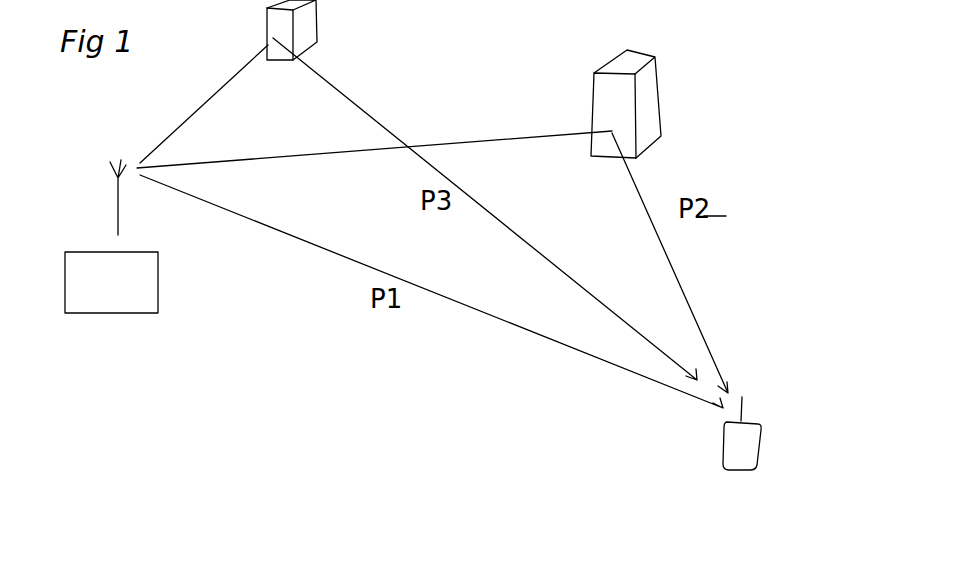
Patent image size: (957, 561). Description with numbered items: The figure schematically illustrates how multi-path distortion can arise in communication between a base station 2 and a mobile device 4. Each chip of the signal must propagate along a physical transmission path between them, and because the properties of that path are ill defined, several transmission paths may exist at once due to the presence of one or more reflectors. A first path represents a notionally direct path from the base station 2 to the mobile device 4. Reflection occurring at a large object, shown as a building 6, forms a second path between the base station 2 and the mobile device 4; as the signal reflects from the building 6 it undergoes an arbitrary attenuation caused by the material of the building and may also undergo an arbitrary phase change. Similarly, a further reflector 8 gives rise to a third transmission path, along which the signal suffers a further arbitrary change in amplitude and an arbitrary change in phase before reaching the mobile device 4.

The base station 2 is at (52, 270).
The mobile device 4 is at (773, 433).
The building 6 is at (665, 126).
The further reflector 8 is at (322, 23).